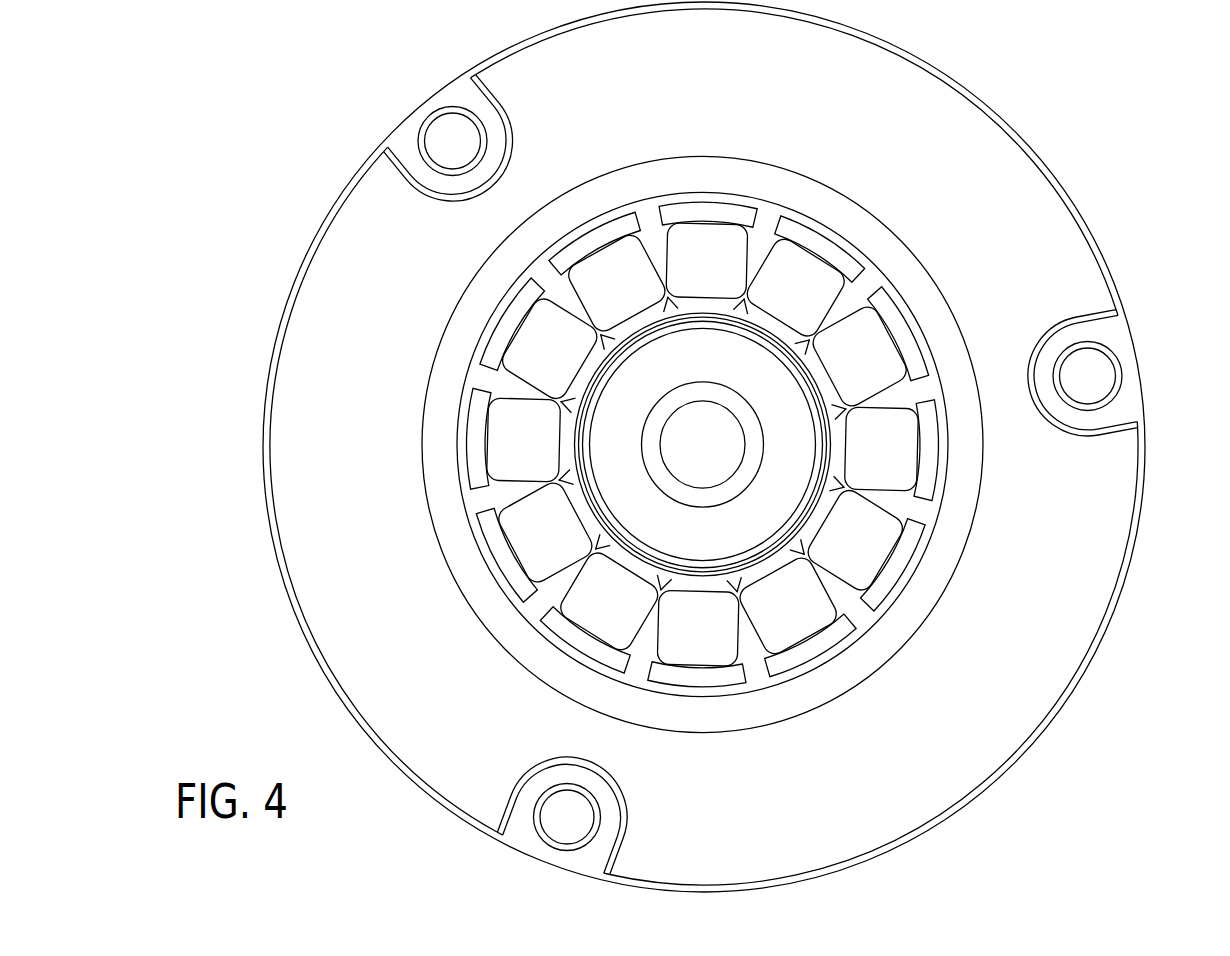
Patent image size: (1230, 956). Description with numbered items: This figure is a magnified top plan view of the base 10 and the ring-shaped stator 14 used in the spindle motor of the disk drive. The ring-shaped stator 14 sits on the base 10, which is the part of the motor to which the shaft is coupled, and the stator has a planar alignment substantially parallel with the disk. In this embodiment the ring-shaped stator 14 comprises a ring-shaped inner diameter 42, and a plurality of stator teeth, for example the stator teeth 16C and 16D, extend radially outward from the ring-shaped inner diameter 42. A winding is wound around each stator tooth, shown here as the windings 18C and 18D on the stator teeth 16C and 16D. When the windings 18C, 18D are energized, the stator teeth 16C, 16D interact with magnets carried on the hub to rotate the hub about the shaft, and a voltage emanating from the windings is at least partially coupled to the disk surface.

The base 10 is at (1143, 462).
The ring-shaped stator 14 is at (881, 253).
The stator tooth 16C is at (470, 458).
The stator tooth 16D is at (933, 472).
The winding 18C is at (493, 432).
The winding 18D is at (908, 443).
The ring-shaped inner diameter 42 is at (690, 312).